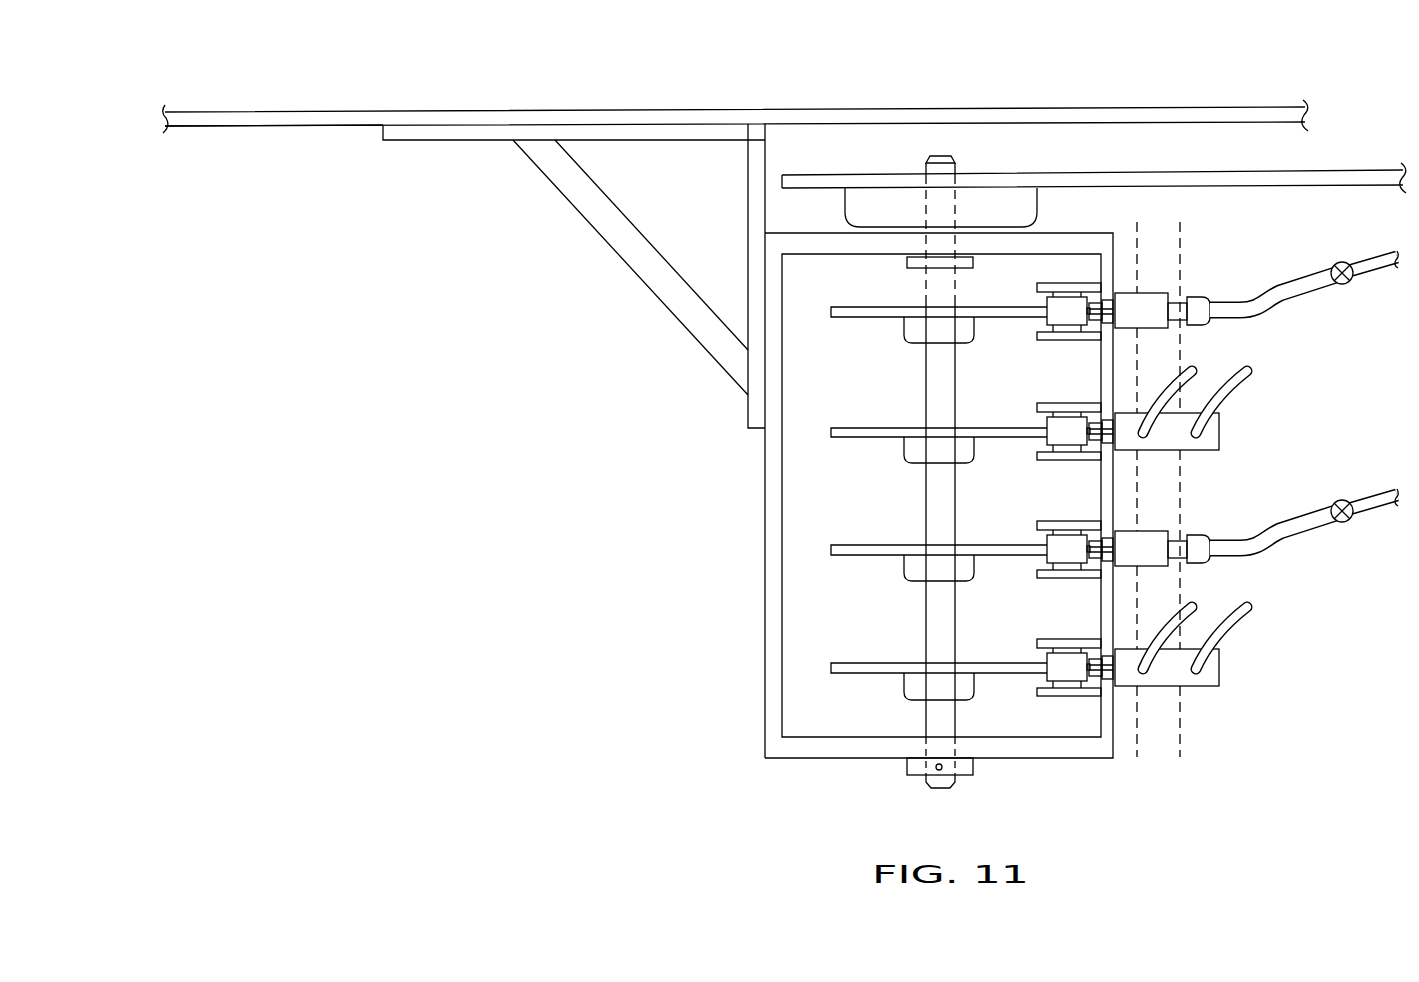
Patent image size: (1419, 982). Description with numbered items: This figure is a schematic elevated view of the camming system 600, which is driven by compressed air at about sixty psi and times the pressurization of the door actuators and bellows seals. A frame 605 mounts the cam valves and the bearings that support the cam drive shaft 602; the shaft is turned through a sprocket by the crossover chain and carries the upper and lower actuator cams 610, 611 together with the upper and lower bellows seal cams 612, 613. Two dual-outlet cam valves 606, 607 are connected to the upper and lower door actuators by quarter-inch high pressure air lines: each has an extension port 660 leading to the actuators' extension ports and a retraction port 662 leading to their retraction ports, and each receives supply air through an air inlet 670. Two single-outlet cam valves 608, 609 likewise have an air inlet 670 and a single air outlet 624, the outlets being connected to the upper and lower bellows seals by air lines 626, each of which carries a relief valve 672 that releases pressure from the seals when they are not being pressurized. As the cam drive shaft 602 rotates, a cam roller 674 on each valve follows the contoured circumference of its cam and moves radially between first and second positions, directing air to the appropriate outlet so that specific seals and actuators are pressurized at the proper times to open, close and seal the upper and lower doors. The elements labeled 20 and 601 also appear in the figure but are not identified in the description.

The support bar 20 is at (537, 110).
The camming system 600 is at (912, 100).
The frame 605 is at (600, 235).
The bearing flange 601 is at (917, 268).
The cam drive shaft 602 is at (932, 382).
The upper bellows seal cam 612 is at (872, 317).
The upper actuator cam 610 is at (861, 437).
The lower bellows seal cam 613 is at (860, 555).
The lower actuator cam 611 is at (861, 673).
The cam roller 674 is at (1055, 428).
The single-outlet cam valve 608 is at (1153, 292).
The single-outlet cam valve 609 is at (1140, 531).
The air outlet 624 is at (1177, 321).
The high pressure air line 626 is at (1272, 302).
The relief valve 672 is at (1343, 262).
The dual-outlet cam valve 606 is at (1178, 450).
The dual-outlet cam valve 607 is at (1220, 668).
The extension port 660 is at (1160, 393).
The retraction port 662 is at (1227, 403).
The air inlet 670 is at (1137, 233).